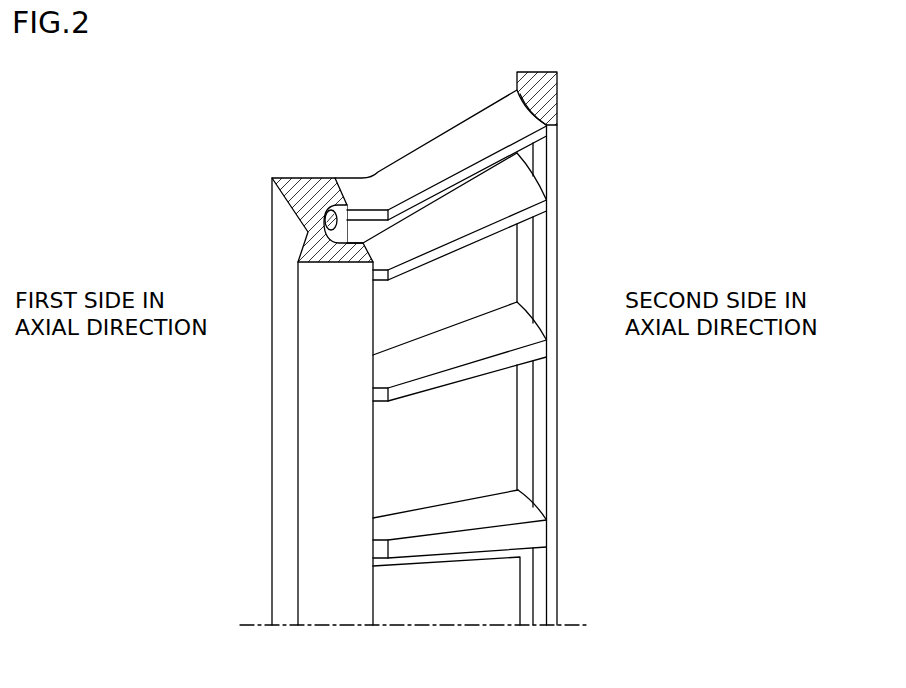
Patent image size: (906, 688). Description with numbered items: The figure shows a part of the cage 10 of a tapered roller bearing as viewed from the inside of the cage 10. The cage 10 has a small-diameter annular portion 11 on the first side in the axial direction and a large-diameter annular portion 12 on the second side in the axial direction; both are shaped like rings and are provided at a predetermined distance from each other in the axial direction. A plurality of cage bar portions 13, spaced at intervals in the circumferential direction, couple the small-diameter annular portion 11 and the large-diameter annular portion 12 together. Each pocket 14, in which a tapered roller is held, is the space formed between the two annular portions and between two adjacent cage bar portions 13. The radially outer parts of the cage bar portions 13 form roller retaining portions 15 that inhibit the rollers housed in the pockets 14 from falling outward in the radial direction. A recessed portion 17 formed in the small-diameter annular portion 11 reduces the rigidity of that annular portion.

The cage 10 is at (272, 453).
The small-diameter annular portion 11 is at (322, 577).
The large-diameter annular portion 12 is at (557, 437).
The cage bar portion 13 is at (453, 212).
The pocket 14 is at (397, 312).
The roller retaining portion 15 is at (463, 317).
The recessed portion 17 is at (325, 213).